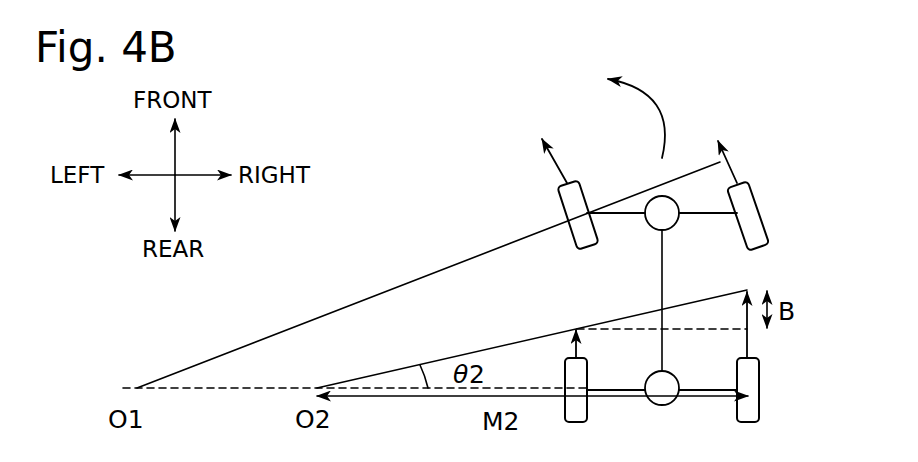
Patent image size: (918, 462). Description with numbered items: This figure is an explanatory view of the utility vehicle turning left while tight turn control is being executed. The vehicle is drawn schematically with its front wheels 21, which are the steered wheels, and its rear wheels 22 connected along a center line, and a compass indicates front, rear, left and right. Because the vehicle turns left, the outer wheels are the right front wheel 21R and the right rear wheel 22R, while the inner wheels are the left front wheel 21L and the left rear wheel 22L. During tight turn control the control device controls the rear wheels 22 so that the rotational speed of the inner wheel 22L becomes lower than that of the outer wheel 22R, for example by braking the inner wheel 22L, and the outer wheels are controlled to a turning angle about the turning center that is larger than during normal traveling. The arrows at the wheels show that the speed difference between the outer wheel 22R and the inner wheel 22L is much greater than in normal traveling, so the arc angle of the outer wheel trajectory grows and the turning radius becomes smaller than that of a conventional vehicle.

The front wheels 21 is at (645, 195).
The left front wheel 21L is at (569, 200).
The right front wheel 21R is at (743, 212).
The rear wheels 22 is at (731, 375).
The left rear wheel 22L is at (578, 408).
The right rear wheel 22R is at (747, 376).